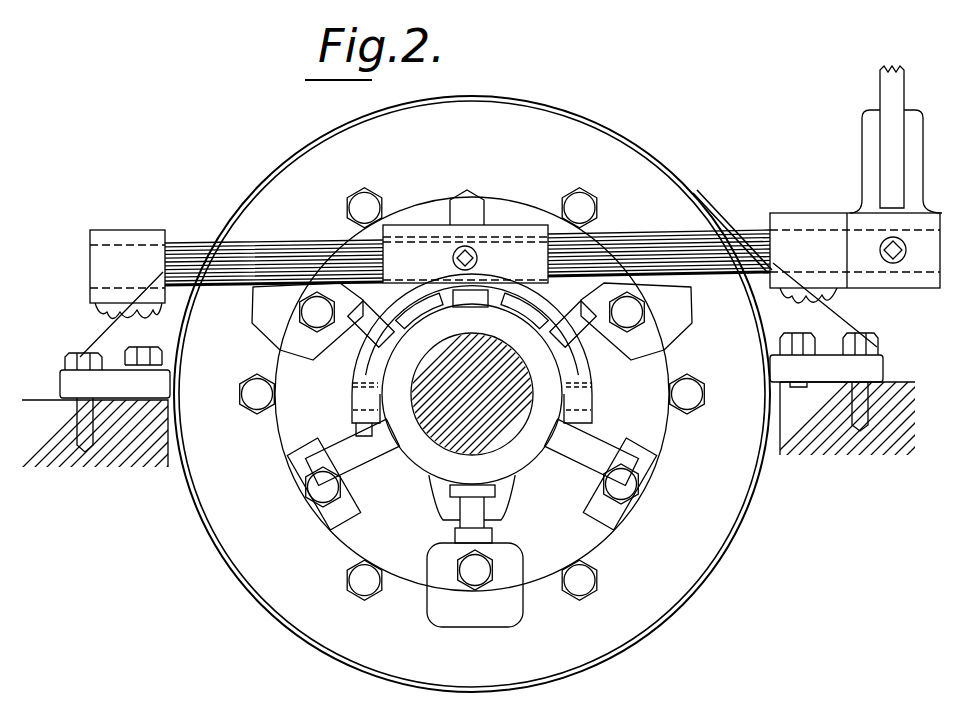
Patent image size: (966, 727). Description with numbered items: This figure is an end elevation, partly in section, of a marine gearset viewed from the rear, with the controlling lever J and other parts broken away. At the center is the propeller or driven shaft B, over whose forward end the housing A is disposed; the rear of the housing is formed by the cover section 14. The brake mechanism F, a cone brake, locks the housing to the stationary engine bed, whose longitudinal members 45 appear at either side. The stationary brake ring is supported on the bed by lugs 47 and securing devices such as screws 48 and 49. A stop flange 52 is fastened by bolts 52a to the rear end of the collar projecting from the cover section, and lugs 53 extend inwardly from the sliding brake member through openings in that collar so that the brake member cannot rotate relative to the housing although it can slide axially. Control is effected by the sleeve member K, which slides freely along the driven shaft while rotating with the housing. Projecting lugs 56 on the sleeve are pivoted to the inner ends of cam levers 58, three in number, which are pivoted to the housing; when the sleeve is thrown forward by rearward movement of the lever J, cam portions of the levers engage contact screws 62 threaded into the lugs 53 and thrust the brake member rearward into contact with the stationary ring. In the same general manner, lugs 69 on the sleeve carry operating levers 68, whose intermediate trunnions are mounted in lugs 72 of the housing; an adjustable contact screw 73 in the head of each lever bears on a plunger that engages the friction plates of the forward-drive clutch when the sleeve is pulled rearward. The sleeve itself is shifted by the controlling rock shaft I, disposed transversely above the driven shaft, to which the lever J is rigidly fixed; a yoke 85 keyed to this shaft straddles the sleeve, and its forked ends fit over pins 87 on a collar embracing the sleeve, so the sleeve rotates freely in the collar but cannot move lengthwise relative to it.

The cover section 14 is at (386, 529).
The longitudinal members 45 is at (138, 437).
The lugs 47 is at (870, 369).
The screws 48 is at (878, 345).
The screws 49 is at (812, 340).
The stop flange 52 is at (705, 550).
The bolts 52a is at (691, 401).
The lugs 53 is at (440, 593).
The projecting lugs 56 is at (448, 510).
The cam levers 58 is at (478, 530).
The contact screw 62 is at (475, 577).
The operating levers 68 is at (347, 460).
The lugs 69 is at (363, 433).
The lugs 72 is at (303, 463).
The adjustable contact screw 73 is at (322, 492).
The yoke 85 is at (600, 352).
The pins 87 is at (372, 386).
The brake mechanism F is at (250, 193).
The controlling rock shaft I is at (667, 243).
The controlling lever J is at (890, 90).
The sleeve member K is at (472, 348).
The housing A is at (472, 416).
The propeller shaft B is at (513, 408).